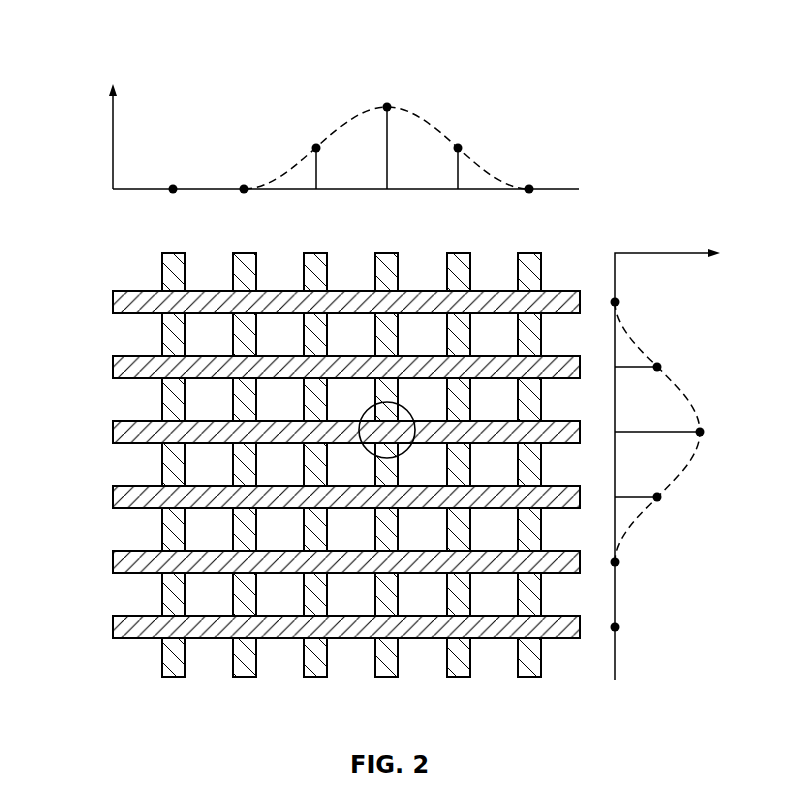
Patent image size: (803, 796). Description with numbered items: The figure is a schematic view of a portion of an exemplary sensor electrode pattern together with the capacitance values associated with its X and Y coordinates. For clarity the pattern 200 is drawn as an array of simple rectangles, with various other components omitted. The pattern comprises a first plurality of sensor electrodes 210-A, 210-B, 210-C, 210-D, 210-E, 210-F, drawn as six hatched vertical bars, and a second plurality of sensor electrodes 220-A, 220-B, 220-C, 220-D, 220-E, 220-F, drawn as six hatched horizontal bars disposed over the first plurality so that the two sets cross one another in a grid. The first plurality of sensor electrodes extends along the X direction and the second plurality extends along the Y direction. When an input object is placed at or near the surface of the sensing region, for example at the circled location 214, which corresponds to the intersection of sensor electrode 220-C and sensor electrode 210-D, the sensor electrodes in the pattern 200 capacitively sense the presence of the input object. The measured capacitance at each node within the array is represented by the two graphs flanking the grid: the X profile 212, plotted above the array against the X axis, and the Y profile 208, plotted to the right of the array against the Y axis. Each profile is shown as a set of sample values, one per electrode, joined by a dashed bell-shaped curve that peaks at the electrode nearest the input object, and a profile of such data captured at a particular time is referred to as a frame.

The pattern 200 is at (672, 128).
The Y profile 208 is at (683, 392).
The X profile 212 is at (355, 118).
The location 214 is at (431, 400).
The sensor electrode 210-A is at (171, 677).
The sensor electrode 210-B is at (242, 677).
The sensor electrode 210-C is at (313, 677).
The sensor electrode 210-D is at (384, 677).
The sensor electrode 210-E is at (456, 677).
The sensor electrode 210-F is at (527, 677).
The sensor electrode 220-A is at (113, 302).
The sensor electrode 220-B is at (113, 367).
The sensor electrode 220-C is at (113, 432).
The sensor electrode 220-D is at (113, 497).
The sensor electrode 220-E is at (113, 562).
The sensor electrode 220-F is at (113, 627).